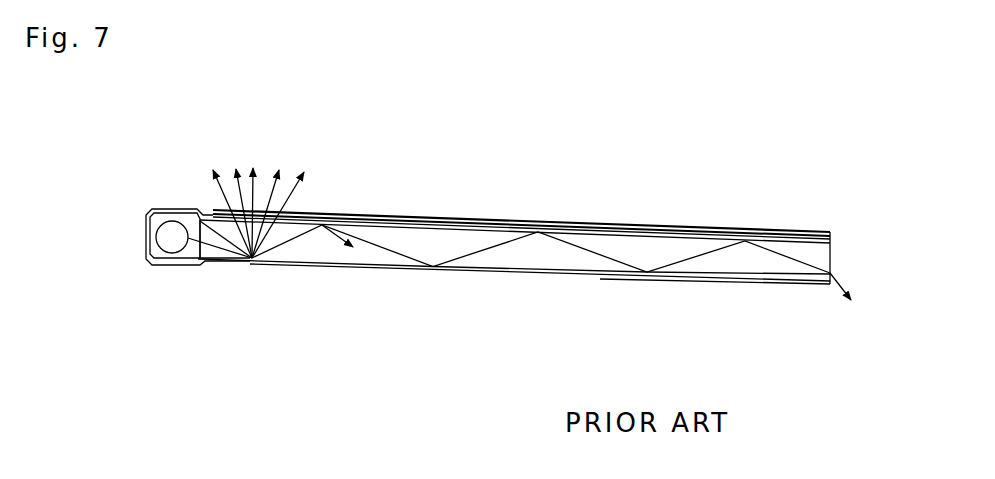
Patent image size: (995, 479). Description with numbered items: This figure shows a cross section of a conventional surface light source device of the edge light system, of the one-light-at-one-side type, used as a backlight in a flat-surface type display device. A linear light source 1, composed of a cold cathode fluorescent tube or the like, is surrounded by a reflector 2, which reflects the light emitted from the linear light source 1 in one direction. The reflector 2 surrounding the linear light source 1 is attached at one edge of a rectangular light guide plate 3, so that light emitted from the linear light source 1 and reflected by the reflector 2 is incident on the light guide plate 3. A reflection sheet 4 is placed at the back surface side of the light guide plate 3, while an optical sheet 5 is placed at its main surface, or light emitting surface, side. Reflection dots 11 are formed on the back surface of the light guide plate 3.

The linear light source 1 is at (172, 230).
The reflector 2 is at (190, 268).
The light guide plate 3 is at (430, 237).
The reflection sheet 4 is at (620, 279).
The optical sheet 5 is at (597, 231).
The reflection dots 11 is at (476, 268).